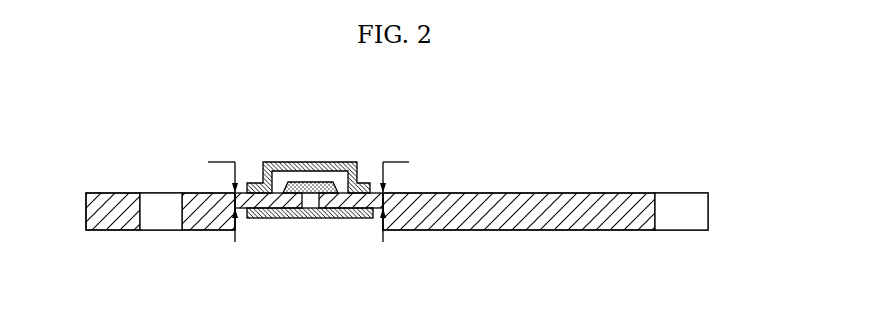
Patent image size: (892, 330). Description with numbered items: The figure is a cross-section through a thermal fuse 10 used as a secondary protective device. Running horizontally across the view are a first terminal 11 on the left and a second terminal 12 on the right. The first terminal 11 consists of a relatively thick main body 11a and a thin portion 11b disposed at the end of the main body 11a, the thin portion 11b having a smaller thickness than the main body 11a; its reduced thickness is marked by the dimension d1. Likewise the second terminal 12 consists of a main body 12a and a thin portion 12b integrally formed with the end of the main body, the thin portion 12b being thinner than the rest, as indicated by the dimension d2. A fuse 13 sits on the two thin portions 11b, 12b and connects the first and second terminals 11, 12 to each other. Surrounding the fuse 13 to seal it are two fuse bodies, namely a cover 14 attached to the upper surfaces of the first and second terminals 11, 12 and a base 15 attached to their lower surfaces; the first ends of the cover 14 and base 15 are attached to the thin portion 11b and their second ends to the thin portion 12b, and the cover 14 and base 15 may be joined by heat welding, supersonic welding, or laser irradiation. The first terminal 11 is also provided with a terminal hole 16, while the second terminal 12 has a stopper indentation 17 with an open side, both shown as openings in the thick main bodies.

The thermal fuse 10 is at (79, 112).
The first terminal 11 is at (275, 281).
The main body 11a is at (197, 230).
The thin portion 11b is at (258, 217).
The second terminal 12 is at (443, 281).
The main body 12a is at (425, 227).
The thin portion 12b is at (355, 217).
The fuse 13 is at (290, 182).
The cover 14 is at (330, 163).
The base 15 is at (310, 217).
The terminal hole 16 is at (181, 204).
The stopper indentation 17 is at (680, 199).
The thickness of first thin portion d1 is at (223, 191).
The thickness of second thin portion d2 is at (394, 191).